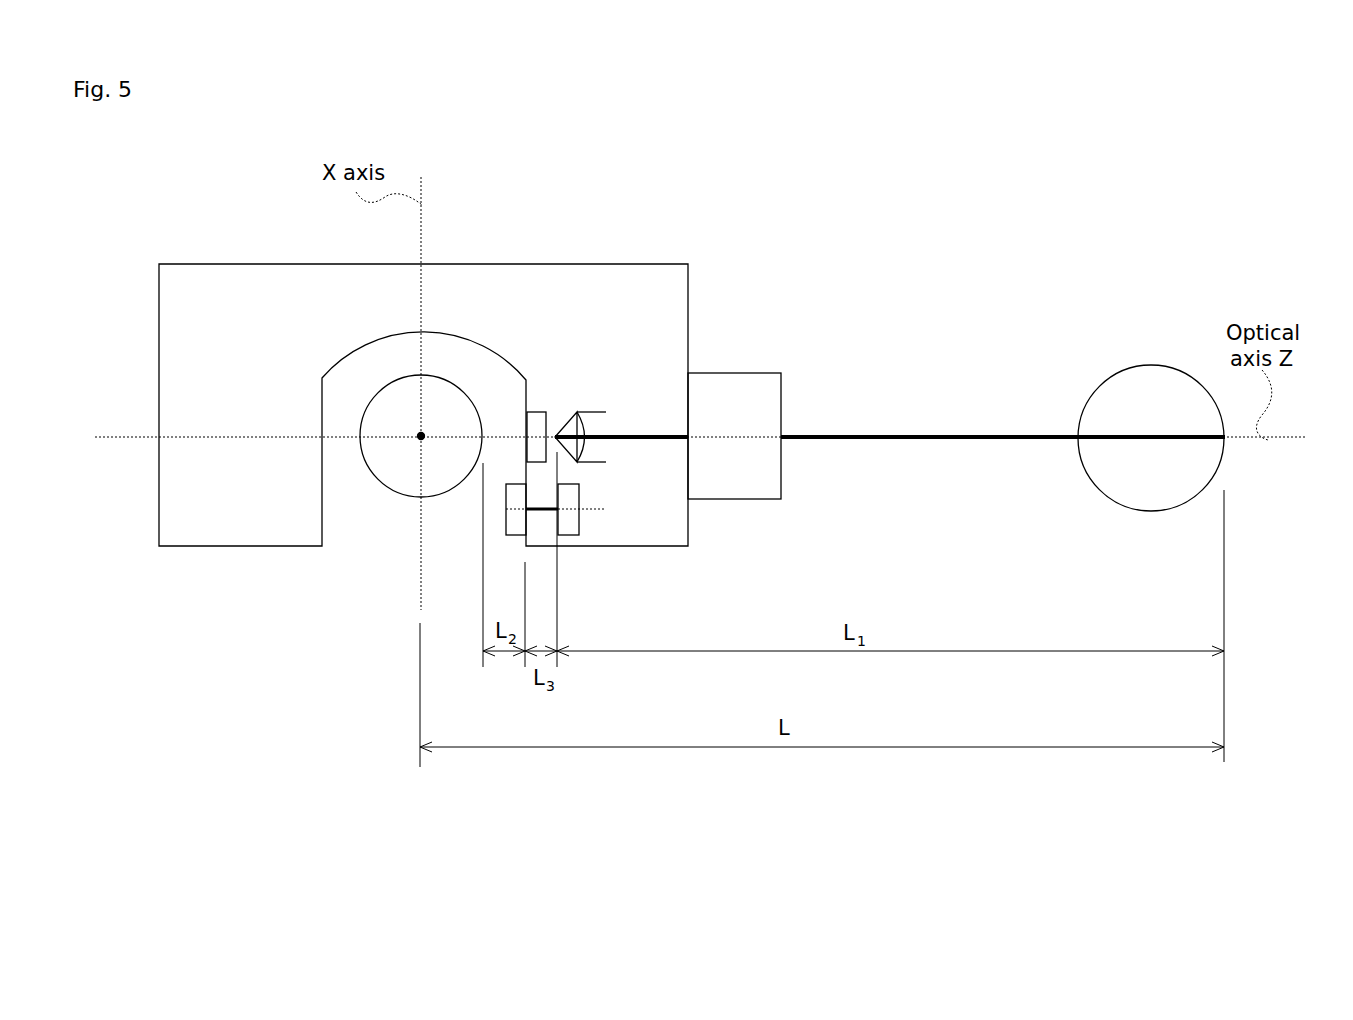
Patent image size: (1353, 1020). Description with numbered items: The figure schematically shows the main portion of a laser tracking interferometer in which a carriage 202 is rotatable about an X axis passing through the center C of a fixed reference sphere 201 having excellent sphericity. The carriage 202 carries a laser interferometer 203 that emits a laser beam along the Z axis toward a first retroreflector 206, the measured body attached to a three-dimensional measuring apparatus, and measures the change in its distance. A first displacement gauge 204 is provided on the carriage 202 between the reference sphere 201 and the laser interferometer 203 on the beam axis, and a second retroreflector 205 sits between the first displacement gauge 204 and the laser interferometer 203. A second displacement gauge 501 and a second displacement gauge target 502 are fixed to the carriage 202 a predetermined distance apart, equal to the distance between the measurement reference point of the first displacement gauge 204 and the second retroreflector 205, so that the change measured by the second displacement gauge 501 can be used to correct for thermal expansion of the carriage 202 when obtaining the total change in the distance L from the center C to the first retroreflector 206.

The reference sphere 201 is at (390, 423).
The carriage 202 is at (268, 284).
The laser interferometer 203 is at (757, 413).
The first displacement gauge 204 is at (534, 422).
The second retroreflector 205 is at (597, 425).
The first retroreflector 206 is at (1168, 408).
The second displacement gauge 501 is at (568, 525).
The second displacement gauge target 502 is at (515, 525).